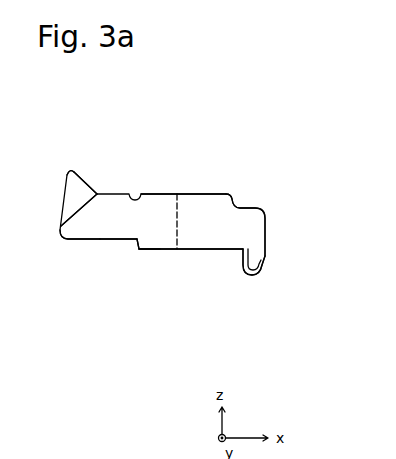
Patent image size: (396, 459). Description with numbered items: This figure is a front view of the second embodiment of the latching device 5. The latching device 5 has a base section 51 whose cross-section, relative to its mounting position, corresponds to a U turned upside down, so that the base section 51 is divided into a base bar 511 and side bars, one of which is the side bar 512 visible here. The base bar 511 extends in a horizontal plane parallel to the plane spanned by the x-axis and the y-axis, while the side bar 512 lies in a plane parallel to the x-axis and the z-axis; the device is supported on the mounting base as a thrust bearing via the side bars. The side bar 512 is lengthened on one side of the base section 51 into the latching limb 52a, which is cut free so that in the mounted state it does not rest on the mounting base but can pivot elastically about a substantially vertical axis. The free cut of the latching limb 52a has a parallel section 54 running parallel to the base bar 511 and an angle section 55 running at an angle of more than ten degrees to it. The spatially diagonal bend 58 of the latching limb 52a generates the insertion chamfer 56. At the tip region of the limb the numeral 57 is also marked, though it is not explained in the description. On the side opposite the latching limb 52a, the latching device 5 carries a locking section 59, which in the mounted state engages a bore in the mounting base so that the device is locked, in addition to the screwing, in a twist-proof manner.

The latching device 5 is at (230, 142).
The base section 51 is at (163, 238).
The base bar 511 is at (150, 192).
The side bar 512 is at (210, 250).
The latching limb 52a is at (113, 215).
The parallel section 54 is at (123, 241).
The angle section 55 is at (80, 241).
The insertion chamfer 56 is at (75, 188).
The front tip 57 is at (71, 167).
The spatially diagonal bend 58 is at (87, 208).
The locking section 59 is at (258, 257).